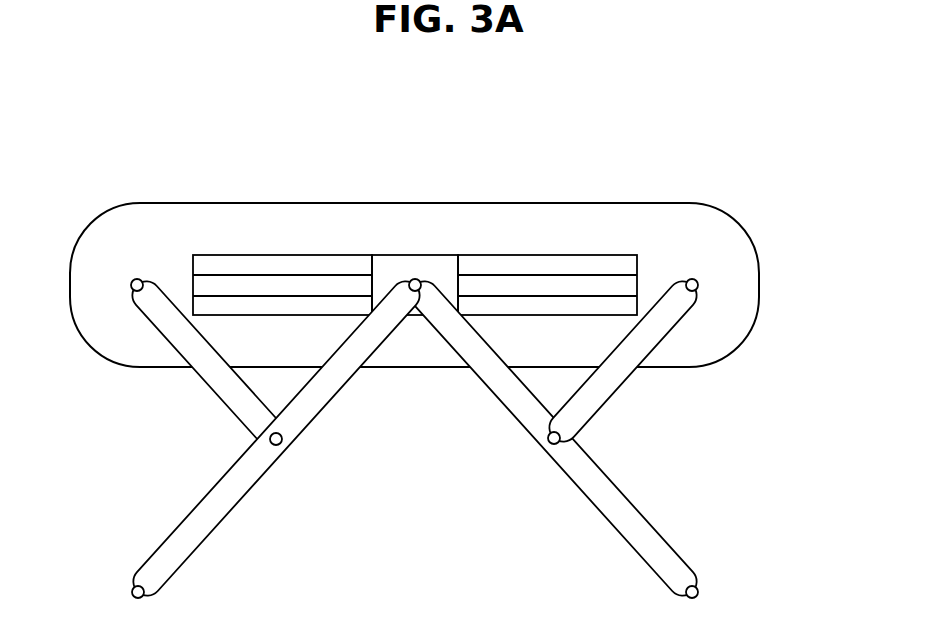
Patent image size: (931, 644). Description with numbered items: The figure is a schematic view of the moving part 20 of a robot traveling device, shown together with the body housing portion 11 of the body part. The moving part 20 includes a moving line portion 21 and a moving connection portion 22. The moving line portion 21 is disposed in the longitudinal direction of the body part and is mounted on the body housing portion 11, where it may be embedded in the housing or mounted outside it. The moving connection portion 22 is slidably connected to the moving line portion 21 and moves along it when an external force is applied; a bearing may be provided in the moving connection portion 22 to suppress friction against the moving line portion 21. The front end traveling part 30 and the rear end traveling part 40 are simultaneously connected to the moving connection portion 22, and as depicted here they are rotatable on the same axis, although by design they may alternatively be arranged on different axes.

The body housing portion 11 is at (743, 343).
The moving part 20 is at (415, 207).
The moving line portion 21 is at (507, 285).
The moving connection portion 22 is at (416, 242).
The front end traveling part 30 is at (338, 400).
The rear end traveling part 40 is at (497, 400).